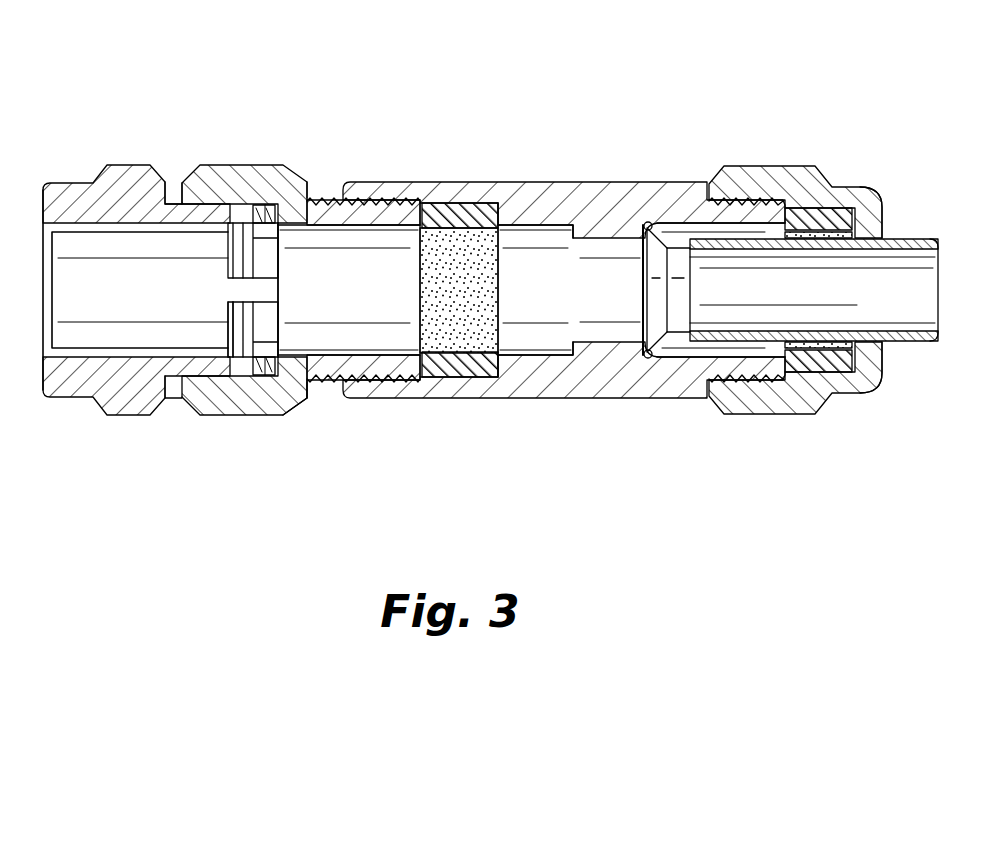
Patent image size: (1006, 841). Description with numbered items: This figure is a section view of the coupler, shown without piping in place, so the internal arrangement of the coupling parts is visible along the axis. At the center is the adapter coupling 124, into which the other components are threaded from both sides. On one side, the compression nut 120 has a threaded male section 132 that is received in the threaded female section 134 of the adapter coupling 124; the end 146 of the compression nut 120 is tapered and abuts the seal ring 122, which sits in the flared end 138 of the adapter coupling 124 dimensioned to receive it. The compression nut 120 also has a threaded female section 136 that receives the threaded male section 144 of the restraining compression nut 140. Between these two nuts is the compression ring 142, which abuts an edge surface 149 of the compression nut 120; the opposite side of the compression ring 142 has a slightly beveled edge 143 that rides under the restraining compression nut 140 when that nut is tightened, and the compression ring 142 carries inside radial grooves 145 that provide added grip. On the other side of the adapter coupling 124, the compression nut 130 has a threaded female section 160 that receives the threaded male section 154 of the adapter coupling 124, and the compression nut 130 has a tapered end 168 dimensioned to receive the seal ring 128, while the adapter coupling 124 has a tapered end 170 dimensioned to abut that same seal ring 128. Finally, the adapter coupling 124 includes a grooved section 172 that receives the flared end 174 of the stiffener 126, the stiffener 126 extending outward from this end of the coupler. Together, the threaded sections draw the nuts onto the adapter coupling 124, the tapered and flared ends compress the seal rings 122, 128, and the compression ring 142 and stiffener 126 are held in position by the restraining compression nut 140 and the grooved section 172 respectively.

The compression nut 120 is at (285, 167).
The seal ring 122 is at (455, 203).
The adapter coupling 124 is at (587, 200).
The stiffener 126 is at (927, 238).
The seal ring 128 is at (838, 400).
The compression nut 130 is at (812, 183).
The threaded male section 132 is at (322, 197).
The threaded female section 134 is at (370, 190).
The threaded female section 136 is at (208, 181).
The flared end 138 is at (505, 203).
The restraining compression nut 140 is at (72, 203).
The compression ring 142 is at (262, 230).
The beveled edge 143 is at (237, 343).
The threaded male section 144 is at (173, 217).
The inside radial grooves 145 is at (245, 325).
The end 146 is at (412, 203).
The edge surface 149 is at (290, 383).
The threaded male section 154 is at (763, 215).
The threaded female section 160 is at (718, 172).
The tapered end 168 is at (853, 215).
The tapered end 170 is at (763, 372).
The grooved section 172 is at (655, 302).
The flared end 174 is at (648, 355).